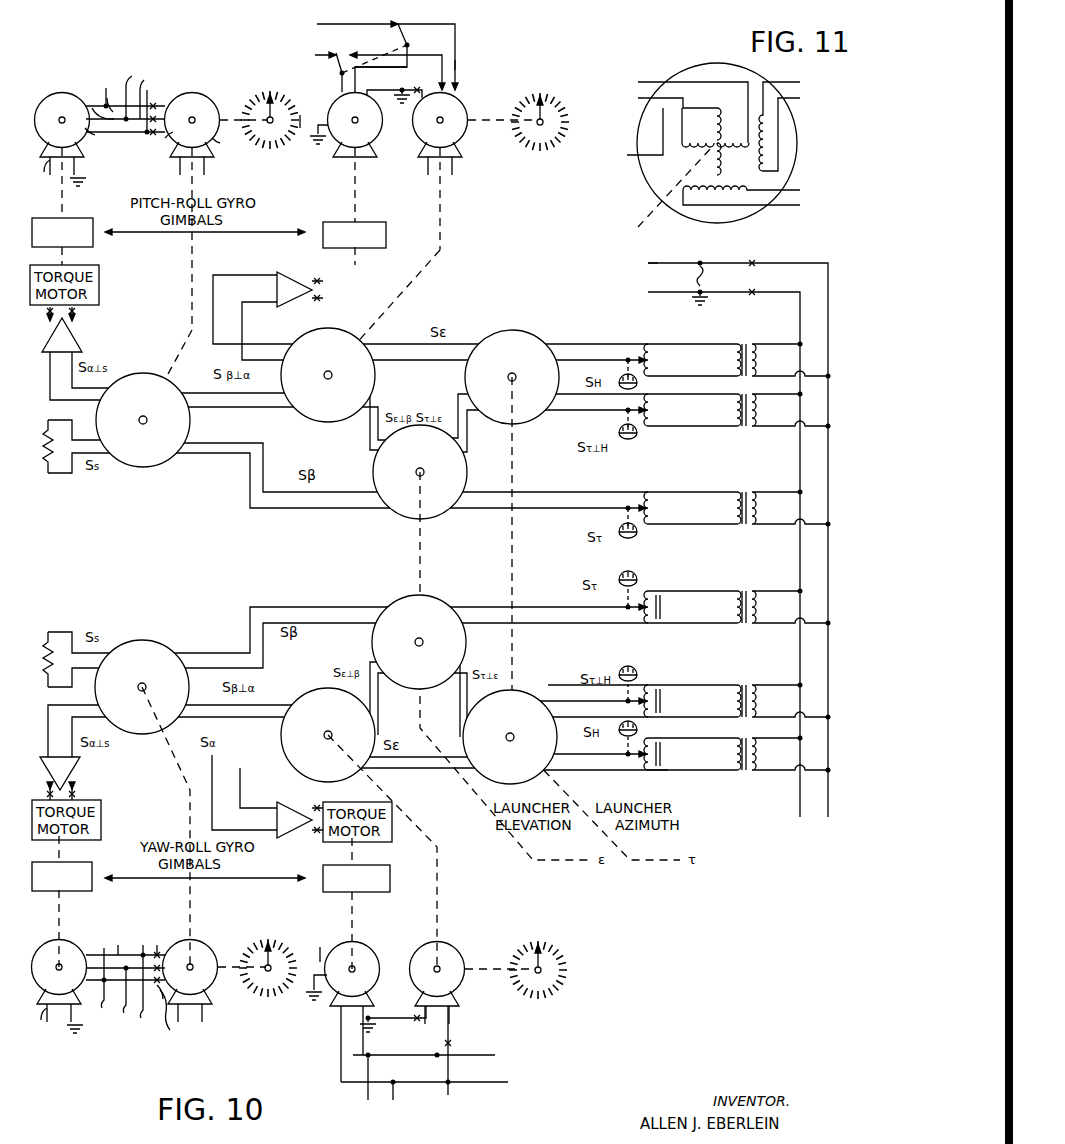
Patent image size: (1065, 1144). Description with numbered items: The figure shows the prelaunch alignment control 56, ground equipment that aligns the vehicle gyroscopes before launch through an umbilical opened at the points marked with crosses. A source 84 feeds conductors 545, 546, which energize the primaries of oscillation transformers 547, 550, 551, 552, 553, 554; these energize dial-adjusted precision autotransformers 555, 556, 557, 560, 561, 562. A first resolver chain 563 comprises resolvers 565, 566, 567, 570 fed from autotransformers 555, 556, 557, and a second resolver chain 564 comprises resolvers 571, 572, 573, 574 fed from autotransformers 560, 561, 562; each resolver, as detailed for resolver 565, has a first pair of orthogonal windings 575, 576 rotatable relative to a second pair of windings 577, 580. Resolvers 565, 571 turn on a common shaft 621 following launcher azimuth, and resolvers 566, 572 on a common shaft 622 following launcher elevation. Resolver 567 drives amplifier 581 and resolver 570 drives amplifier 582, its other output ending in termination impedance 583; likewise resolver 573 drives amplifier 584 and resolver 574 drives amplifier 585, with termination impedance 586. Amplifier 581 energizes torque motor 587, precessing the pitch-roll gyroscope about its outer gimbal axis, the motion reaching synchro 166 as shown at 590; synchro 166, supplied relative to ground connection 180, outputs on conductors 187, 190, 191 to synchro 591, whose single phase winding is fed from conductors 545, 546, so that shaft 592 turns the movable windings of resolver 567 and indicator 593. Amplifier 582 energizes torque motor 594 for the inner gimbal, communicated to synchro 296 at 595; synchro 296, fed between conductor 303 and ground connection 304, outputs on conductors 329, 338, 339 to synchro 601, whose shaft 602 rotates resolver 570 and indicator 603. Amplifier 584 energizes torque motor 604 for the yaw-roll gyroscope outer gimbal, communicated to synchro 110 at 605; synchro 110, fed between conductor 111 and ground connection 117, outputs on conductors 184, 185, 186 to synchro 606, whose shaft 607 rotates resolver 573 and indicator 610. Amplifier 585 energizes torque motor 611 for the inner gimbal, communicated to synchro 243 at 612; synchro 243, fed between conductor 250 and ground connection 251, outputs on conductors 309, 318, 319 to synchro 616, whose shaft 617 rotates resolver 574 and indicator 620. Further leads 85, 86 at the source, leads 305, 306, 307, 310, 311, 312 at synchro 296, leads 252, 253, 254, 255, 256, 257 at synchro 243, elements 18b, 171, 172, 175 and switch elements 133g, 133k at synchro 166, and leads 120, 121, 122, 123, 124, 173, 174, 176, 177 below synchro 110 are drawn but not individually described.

In FIG. 10, the synchro 296 is at (64, 100).
In FIG. 10, the conductor 339 is at (173, 102).
In FIG. 10, the synchro 166 is at (370, 130).
In FIG. 10, the synchro 591 is at (461, 108).
In FIG. 10, the indicator 603 is at (266, 96).
In FIG. 10, the indicator 593 is at (560, 114).
In FIG. 10, the shaft 602 is at (250, 116).
In FIG. 10, the shaft 592 is at (455, 138).
In FIG. 10, the torque motor 587 is at (443, 252).
In FIG. 10, the rotation communication 590 is at (390, 236).
In FIG. 10, the rotation communication 595 is at (100, 236).
In FIG. 10, the torque motor 594 is at (98, 290).
In FIG. 10, the amplifier 582 is at (75, 336).
In FIG. 10, the amplifier 581 is at (292, 306).
In FIG. 10, the termination impedance 583 is at (46, 470).
In FIG. 10, the resolver 570 is at (143, 420).
In FIG. 10, the resolver 567 is at (328, 375).
In FIG. 10, the resolver 565 is at (512, 377).
In FIG. 11, the resolver 565 is at (722, 66).
In FIG. 10, the resolver 566 is at (420, 472).
In FIG. 10, the first resolver chain 563 is at (566, 472).
In FIG. 10, the second resolver chain 564 is at (560, 665).
In FIG. 10, the common shaft 621 is at (512, 557).
In FIG. 11, the common shaft 621 is at (646, 214).
In FIG. 10, the common shaft 622 is at (419, 728).
In FIG. 10, the power line 85 is at (660, 263).
In FIG. 10, the source 84 is at (691, 278).
In FIG. 10, the ground line 86 is at (676, 294).
In FIG. 10, the conductor 545 is at (773, 263).
In FIG. 10, the conductor 546 is at (773, 293).
In FIG. 10, the precision autotransformer 555 is at (654, 339).
In FIG. 10, the oscillation transformer 547 is at (742, 340).
In FIG. 10, the precision autotransformer 556 is at (650, 392).
In FIG. 10, the oscillation transformer 550 is at (750, 394).
In FIG. 10, the precision autotransformer 557 is at (650, 488).
In FIG. 10, the oscillation transformer 551 is at (748, 489).
In FIG. 10, the precision autotransformer 560 is at (648, 630).
In FIG. 10, the oscillation transformer 552 is at (742, 584).
In FIG. 10, the precision autotransformer 561 is at (652, 724).
In FIG. 10, the oscillation transformer 553 is at (744, 678).
In FIG. 10, the precision autotransformer 562 is at (652, 769).
In FIG. 10, the oscillation transformer 554 is at (748, 734).
In FIG. 10, the prelaunch alignment control 56 is at (604, 780).
In FIG. 10, the termination impedance 586 is at (44, 646).
In FIG. 10, the resolver 574 is at (142, 687).
In FIG. 10, the resolver 572 is at (419, 642).
In FIG. 10, the resolver 573 is at (328, 735).
In FIG. 10, the resolver 571 is at (510, 737).
In FIG. 10, the amplifier 585 is at (96, 765).
In FIG. 10, the torque motor 611 is at (100, 820).
In FIG. 10, the rotation communication 612 is at (98, 862).
In FIG. 10, the shaft 617 is at (188, 786).
In FIG. 10, the amplifier 584 is at (288, 802).
In FIG. 10, the torque motor 604 is at (332, 838).
In FIG. 10, the rotation communication 605 is at (400, 874).
In FIG. 10, the shaft 607 is at (440, 862).
In FIG. 10, the synchro 243 is at (82, 945).
In FIG. 10, the synchro 616 is at (204, 952).
In FIG. 10, the synchro 110 is at (372, 944).
In FIG. 10, the synchro 606 is at (452, 958).
In FIG. 10, the indicator 620 is at (270, 998).
In FIG. 10, the indicator 610 is at (552, 954).
In FIG. 10, the conductor 250 is at (44, 1030).
In FIG. 10, the ground connection 251 is at (83, 1032).
In FIG. 10, the lead 256 is at (90, 1002).
In FIG. 10, the lead 257 is at (126, 1014).
In FIG. 10, the lead 255 is at (140, 1020).
In FIG. 10, the conductor 309 is at (164, 1005).
In FIG. 10, the lead 253 is at (171, 1029).
In FIG. 10, the lead 254 is at (120, 944).
In FIG. 10, the lead 252 is at (118, 954).
In FIG. 10, the conductor 318 is at (151, 940).
In FIG. 10, the conductor 319 is at (160, 956).
In FIG. 10, the conductor 111 is at (321, 945).
In FIG. 10, the ground connection 117 is at (319, 980).
In FIG. 10, the conductor 184 is at (416, 1016).
In FIG. 10, the ground 120 is at (376, 1028).
In FIG. 10, the lead 177 is at (394, 1054).
In FIG. 10, the lead 123 is at (357, 1068).
In FIG. 10, the conductor 186 is at (425, 1046).
In FIG. 10, the conductor 185 is at (450, 1038).
In FIG. 10, the lead 176 is at (324, 54).
In FIG. 10, the lead 173 is at (364, 26).
In FIG. 10, the lead 121 is at (340, 1090).
In FIG. 10, the lead 124 is at (368, 1108).
In FIG. 10, the lead 122 is at (394, 1100).
In FIG. 10, the lead 174 is at (448, 1096).
In FIG. 10, the conductor 303 is at (44, 175).
In FIG. 10, the ground connection 304 is at (86, 178).
In FIG. 10, the lead 311 is at (116, 132).
In FIG. 10, the conductor 329 is at (165, 136).
In FIG. 10, the synchro 601 is at (219, 137).
In FIG. 10, the pickoff lead 305 is at (106, 105).
In FIG. 10, the lead 306 is at (133, 76).
In FIG. 10, the lead 307 is at (118, 88).
In FIG. 10, the lead 310 is at (106, 102).
In FIG. 10, the lead 312 is at (140, 90).
In FIG. 10, the conductor 338 is at (154, 104).
In FIG. 10, the ground connection 180 is at (316, 148).
In FIG. 10, the lead 18b is at (326, 110).
In FIG. 10, the relay switch 133k is at (404, 34).
In FIG. 10, the conductor 191 is at (398, 62).
In FIG. 10, the conductor 190 is at (456, 60).
In FIG. 10, the lead 172 is at (405, 66).
In FIG. 10, the relay switch 133g is at (340, 56).
In FIG. 10, the lead 175 is at (340, 94).
In FIG. 10, the conductor 187 is at (405, 84).
In FIG. 10, the ground lead 171 is at (395, 104).
In FIG. 11, the winding 577 is at (735, 112).
In FIG. 11, the winding 580 is at (688, 156).
In FIG. 11, the winding 576 is at (730, 188).
In FIG. 11, the winding 575 is at (766, 156).